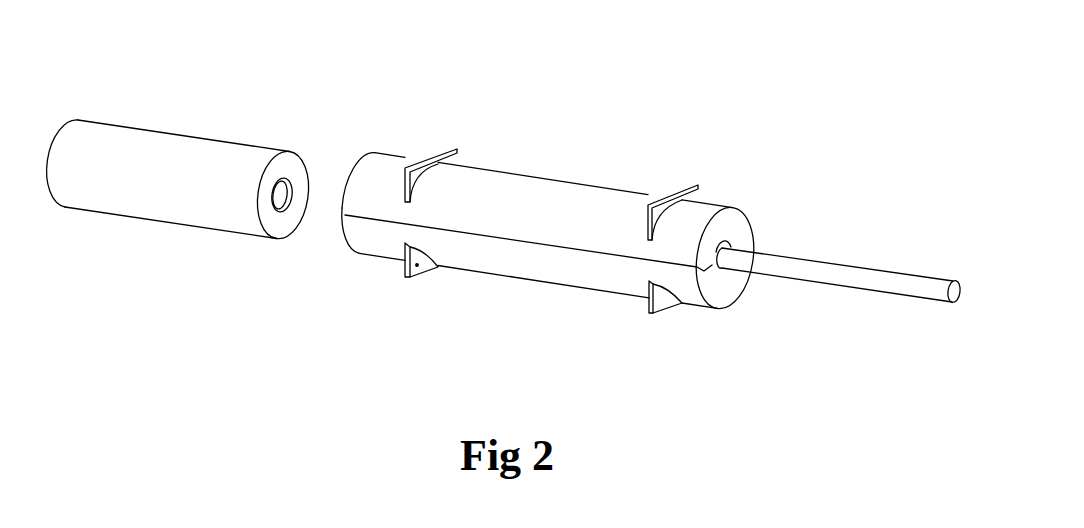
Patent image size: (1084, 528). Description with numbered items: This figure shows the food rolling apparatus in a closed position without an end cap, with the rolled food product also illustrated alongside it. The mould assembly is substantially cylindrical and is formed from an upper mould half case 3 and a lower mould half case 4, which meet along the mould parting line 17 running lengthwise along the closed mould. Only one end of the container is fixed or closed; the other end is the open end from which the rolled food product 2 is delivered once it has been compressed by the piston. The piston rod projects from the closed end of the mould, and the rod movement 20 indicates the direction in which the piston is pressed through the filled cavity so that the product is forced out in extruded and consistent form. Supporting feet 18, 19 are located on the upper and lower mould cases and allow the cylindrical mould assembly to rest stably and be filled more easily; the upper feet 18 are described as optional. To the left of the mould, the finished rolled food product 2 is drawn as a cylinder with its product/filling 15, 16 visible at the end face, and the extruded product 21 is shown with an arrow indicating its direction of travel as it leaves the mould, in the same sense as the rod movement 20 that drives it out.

The rolled food product 2 is at (202, 150).
The upper mould half case 3 is at (538, 190).
The lower mould half case 4 is at (610, 285).
The product/filling 15 is at (92, 147).
The product/filling 16 is at (277, 192).
The mould parting line 17 is at (592, 257).
The upper feet 18 is at (452, 158).
The supporting feet 19 is at (698, 197).
The rod movement 20 is at (886, 240).
The extruded product 21 is at (204, 111).